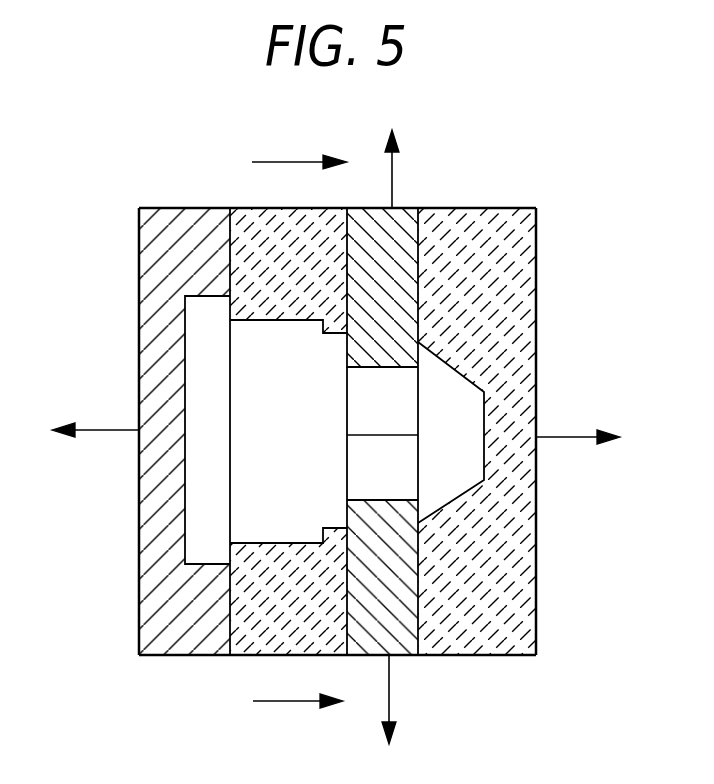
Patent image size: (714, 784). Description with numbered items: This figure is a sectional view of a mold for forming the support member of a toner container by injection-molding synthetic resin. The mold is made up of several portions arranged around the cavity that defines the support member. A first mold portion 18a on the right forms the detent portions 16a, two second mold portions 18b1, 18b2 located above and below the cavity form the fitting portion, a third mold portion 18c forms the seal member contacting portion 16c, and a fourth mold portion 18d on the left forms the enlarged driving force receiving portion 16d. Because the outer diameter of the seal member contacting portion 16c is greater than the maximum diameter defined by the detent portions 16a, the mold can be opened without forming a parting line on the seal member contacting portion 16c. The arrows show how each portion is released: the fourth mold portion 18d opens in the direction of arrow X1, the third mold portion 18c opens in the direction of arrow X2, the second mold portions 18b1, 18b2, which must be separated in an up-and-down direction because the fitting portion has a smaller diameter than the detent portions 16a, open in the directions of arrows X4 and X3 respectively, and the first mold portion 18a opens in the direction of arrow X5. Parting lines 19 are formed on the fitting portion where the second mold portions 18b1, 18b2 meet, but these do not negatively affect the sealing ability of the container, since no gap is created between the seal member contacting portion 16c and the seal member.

The detent portions 16a is at (421, 346).
The seal member contacting portion 16c is at (340, 328).
The enlarged driving force receiving portion 16d is at (208, 297).
The first mold portion 18a is at (537, 245).
The second mold portion 18b1 is at (399, 232).
The second mold portion 18b2 is at (402, 636).
The third mold portion 18c is at (266, 220).
The fourth mold portion 18d is at (148, 250).
The parting lines 19 is at (390, 436).
The arrow X1 is at (106, 430).
The arrow X2 is at (295, 162).
The arrow X3 is at (390, 701).
The arrow X4 is at (395, 168).
The arrow X5 is at (578, 437).